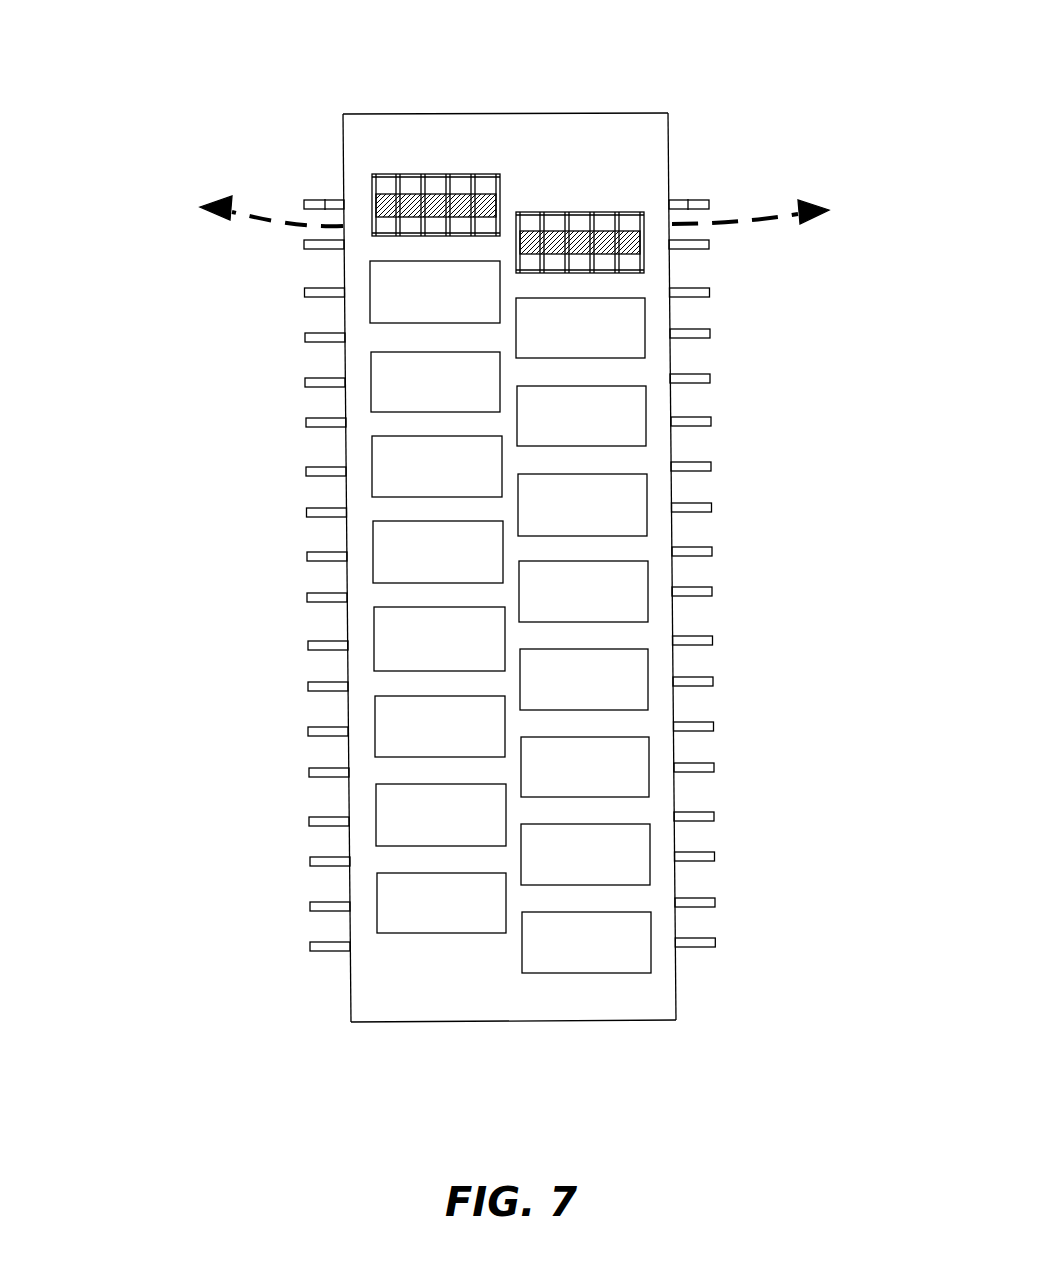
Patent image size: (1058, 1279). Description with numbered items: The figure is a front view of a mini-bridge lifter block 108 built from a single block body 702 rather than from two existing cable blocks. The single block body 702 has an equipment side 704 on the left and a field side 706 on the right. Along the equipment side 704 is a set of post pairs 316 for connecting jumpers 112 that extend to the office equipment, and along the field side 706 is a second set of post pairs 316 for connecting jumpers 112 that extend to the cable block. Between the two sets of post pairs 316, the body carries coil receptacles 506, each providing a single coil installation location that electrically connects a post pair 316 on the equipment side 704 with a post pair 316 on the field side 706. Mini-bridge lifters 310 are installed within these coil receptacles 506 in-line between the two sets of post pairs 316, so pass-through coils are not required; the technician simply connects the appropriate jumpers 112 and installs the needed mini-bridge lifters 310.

The mini-bridge lifter block 108 is at (234, 73).
The jumpers 112 is at (339, 203).
The mini-bridge lifters 310 is at (480, 196).
The post pairs 316 is at (305, 422).
The coil receptacles 506 is at (420, 570).
The single block body 702 is at (537, 126).
The equipment side 704 is at (351, 981).
The field side 706 is at (677, 981).